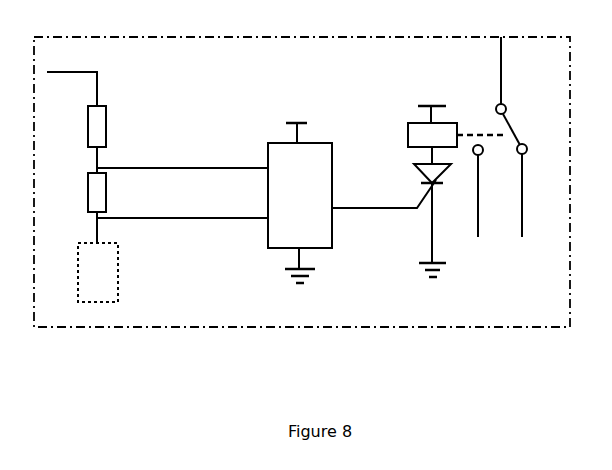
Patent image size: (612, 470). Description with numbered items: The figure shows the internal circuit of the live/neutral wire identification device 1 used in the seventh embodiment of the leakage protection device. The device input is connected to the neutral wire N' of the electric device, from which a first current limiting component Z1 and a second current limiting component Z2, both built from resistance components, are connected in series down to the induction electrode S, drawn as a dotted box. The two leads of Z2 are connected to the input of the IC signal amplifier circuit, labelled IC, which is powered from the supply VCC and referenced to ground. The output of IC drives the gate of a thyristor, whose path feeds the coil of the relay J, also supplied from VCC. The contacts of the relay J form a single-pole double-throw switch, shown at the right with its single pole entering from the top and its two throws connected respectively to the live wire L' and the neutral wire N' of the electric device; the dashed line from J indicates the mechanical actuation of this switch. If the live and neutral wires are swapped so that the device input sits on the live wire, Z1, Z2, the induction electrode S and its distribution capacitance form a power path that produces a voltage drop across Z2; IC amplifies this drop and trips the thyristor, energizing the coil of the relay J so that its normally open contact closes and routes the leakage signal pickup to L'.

The live/neutral wire identification device 1 is at (300, 320).
The current limiting component Z1 is at (107, 126).
The current limiting component Z2 is at (107, 192).
The induction electrode S is at (103, 272).
The IC signal amplifier circuit IC is at (300, 195).
The relay J is at (432, 135).
The supply voltage VCC is at (365, 116).
The live wire of the electric device L' is at (480, 207).
The neutral wire of the electric device N' is at (72, 77).